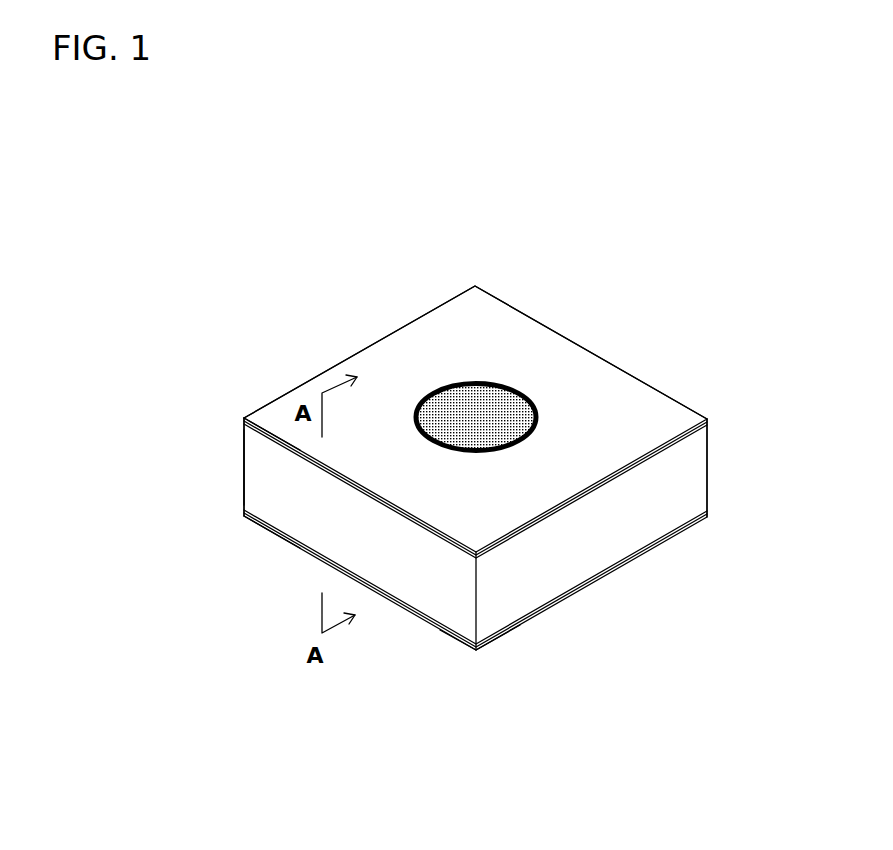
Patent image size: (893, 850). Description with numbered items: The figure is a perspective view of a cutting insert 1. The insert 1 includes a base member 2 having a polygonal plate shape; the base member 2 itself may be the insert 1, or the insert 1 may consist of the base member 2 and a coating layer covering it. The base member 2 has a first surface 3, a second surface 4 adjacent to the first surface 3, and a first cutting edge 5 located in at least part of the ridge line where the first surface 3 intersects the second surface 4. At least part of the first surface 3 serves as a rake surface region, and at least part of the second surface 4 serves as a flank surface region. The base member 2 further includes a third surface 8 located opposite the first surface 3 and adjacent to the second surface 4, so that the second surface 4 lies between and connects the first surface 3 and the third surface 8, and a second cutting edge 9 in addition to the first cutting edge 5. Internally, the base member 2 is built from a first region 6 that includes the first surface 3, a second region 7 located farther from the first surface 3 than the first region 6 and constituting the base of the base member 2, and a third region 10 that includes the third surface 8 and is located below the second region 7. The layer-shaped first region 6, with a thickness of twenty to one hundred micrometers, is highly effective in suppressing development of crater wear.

The cutting insert 1 is at (560, 300).
The base member 2 is at (513, 280).
The first surface 3 is at (402, 357).
The second surface 4 is at (395, 570).
The first cutting edge 5 is at (500, 537).
The first region 6 is at (244, 418).
The second region 7 is at (244, 468).
The third surface 8 is at (558, 607).
The second cutting edge 9 is at (527, 625).
The third region 10 is at (244, 516).